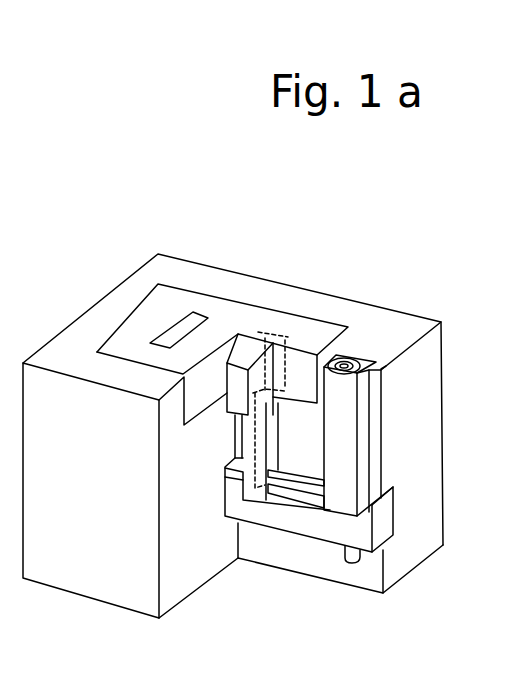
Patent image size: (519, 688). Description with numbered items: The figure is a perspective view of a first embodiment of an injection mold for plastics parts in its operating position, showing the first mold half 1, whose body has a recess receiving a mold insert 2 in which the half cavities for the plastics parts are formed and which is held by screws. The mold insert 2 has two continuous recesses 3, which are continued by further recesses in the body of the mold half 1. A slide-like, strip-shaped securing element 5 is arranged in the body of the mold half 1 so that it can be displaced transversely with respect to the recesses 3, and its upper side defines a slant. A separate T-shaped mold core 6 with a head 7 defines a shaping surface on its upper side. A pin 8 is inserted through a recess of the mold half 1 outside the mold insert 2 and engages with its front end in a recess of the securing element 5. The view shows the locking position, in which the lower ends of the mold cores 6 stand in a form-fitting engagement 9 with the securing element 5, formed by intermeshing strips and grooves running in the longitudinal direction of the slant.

The first mold half 1 is at (425, 408).
The mold insert 2 is at (155, 322).
The continuous recesses 3 is at (175, 332).
The securing element 5 is at (383, 520).
The mold core 6 is at (273, 343).
The head 7 is at (258, 347).
The pin 8 is at (372, 365).
The form-fitting engagement 9 is at (286, 492).